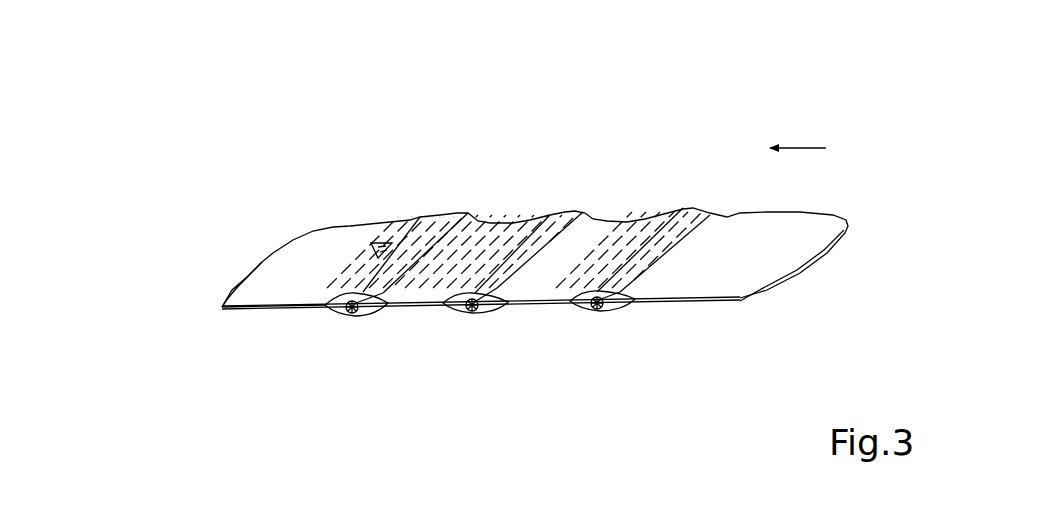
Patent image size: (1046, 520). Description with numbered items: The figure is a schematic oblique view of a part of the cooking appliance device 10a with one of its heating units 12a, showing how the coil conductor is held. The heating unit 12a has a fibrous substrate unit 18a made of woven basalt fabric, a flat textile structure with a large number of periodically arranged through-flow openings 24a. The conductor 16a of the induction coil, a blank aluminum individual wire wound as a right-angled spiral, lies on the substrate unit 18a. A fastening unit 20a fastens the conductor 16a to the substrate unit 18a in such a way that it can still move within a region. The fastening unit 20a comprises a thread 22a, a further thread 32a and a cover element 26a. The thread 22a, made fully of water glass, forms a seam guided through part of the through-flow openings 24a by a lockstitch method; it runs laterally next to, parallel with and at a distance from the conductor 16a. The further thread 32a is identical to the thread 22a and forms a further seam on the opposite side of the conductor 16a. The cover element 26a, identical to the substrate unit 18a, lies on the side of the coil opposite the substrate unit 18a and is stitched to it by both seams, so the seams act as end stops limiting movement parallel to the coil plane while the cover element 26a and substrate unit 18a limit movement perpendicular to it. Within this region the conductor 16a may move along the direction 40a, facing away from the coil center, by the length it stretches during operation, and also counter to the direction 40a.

The cooking appliance device 10a is at (249, 99).
The heating unit 12a is at (228, 262).
The conductor 16a is at (351, 313).
The substrate unit 18a is at (222, 307).
The fastening unit 20a is at (418, 227).
The thread 22a is at (317, 307).
The through-flow openings 24a is at (371, 243).
The cover element 26a is at (430, 217).
The further thread 32a is at (490, 223).
The direction 40a is at (797, 148).